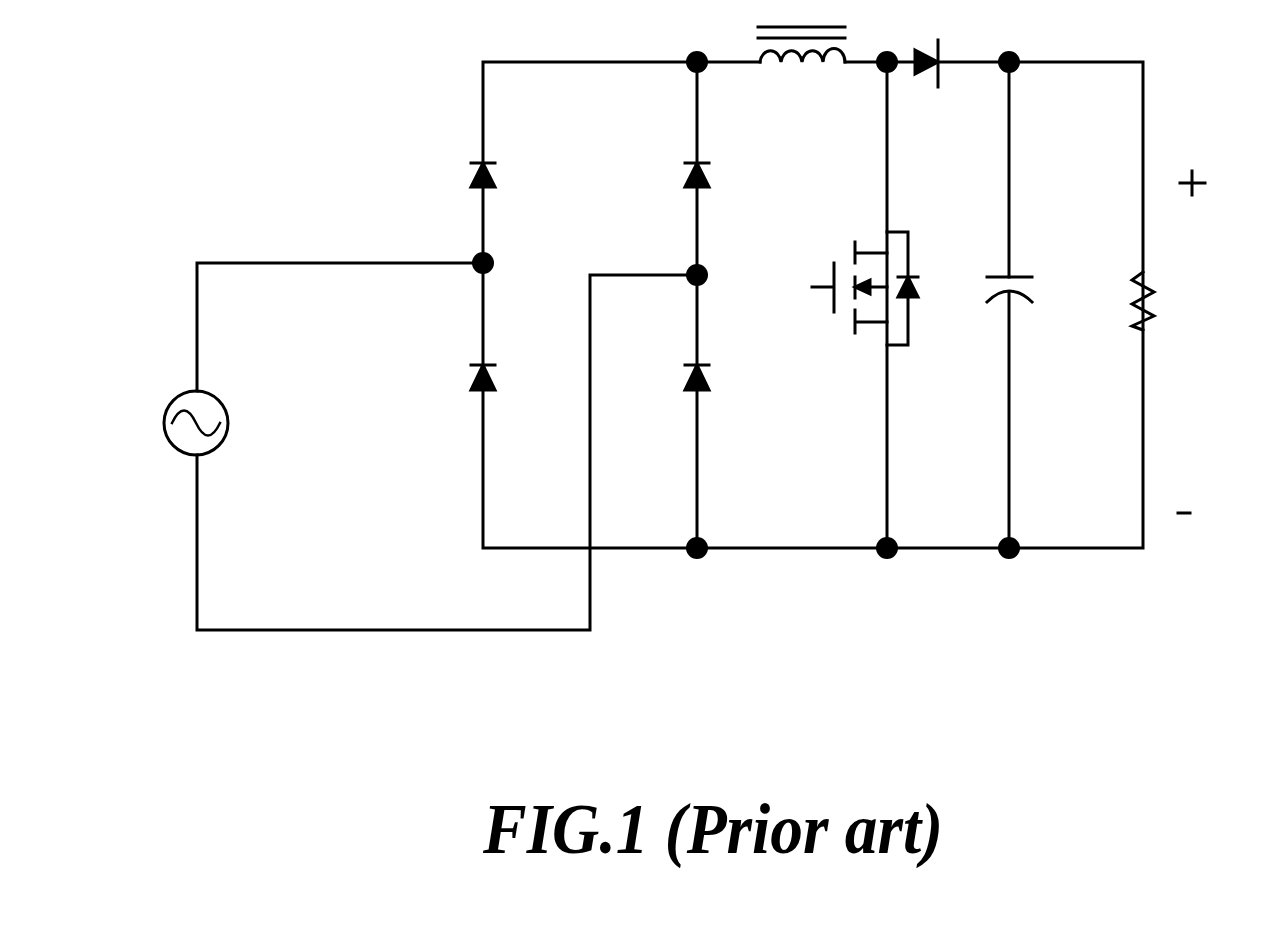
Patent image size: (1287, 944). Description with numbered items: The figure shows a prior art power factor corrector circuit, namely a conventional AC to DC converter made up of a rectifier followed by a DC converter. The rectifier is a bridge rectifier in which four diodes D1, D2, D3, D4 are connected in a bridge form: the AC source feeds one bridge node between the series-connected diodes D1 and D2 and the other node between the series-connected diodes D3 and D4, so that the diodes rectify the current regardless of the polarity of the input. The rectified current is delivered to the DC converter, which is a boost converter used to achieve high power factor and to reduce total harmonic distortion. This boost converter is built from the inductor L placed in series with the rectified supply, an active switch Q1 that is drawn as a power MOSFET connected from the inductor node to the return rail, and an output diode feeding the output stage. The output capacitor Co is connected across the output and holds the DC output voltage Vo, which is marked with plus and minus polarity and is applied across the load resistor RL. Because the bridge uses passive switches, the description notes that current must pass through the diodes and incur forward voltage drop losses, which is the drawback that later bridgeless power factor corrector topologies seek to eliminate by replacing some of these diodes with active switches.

The diode D1 is at (439, 178).
The diode D2 is at (443, 388).
The diode D3 is at (668, 180).
The diode D4 is at (668, 384).
The inductor L is at (801, 85).
The active switch Q1 is at (899, 336).
The output capacitor Co is at (986, 302).
The load resistor RL is at (1110, 310).
The output voltage Vo is at (1193, 342).